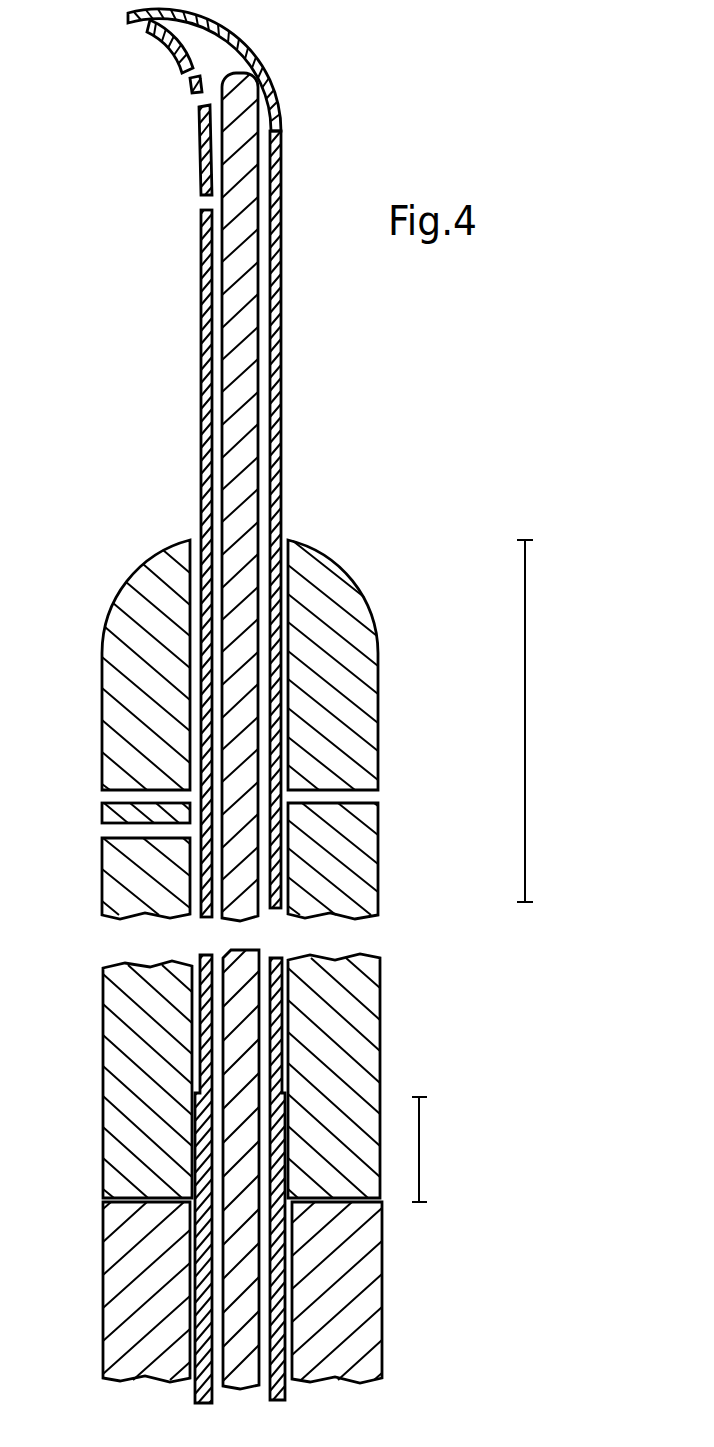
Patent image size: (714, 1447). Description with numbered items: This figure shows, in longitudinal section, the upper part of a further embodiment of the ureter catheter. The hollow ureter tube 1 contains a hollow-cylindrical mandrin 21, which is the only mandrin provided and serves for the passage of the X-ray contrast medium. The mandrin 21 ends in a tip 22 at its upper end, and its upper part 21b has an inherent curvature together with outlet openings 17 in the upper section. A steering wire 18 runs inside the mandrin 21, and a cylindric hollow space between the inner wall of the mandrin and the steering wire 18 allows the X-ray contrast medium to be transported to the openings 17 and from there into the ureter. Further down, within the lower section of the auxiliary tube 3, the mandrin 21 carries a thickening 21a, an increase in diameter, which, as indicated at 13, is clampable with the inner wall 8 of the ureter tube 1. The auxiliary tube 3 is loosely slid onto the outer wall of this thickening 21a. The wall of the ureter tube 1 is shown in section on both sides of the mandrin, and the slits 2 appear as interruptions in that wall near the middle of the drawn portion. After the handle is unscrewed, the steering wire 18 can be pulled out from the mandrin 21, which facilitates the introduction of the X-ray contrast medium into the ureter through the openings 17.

The ureter tube 1 is at (140, 567).
The annular groove 2 is at (108, 797).
The auxiliary tube 3 is at (103, 1285).
The inner wall of the ureter tube 8 is at (290, 718).
The clamping indication 13 is at (419, 1155).
The outlet openings 17 is at (198, 98).
The steering wire 18 is at (238, 248).
The hollow mandrin 21 is at (202, 343).
The thickening 21a is at (285, 1115).
The upper part of the mandrin 21b is at (525, 620).
The tip 22 is at (148, 30).